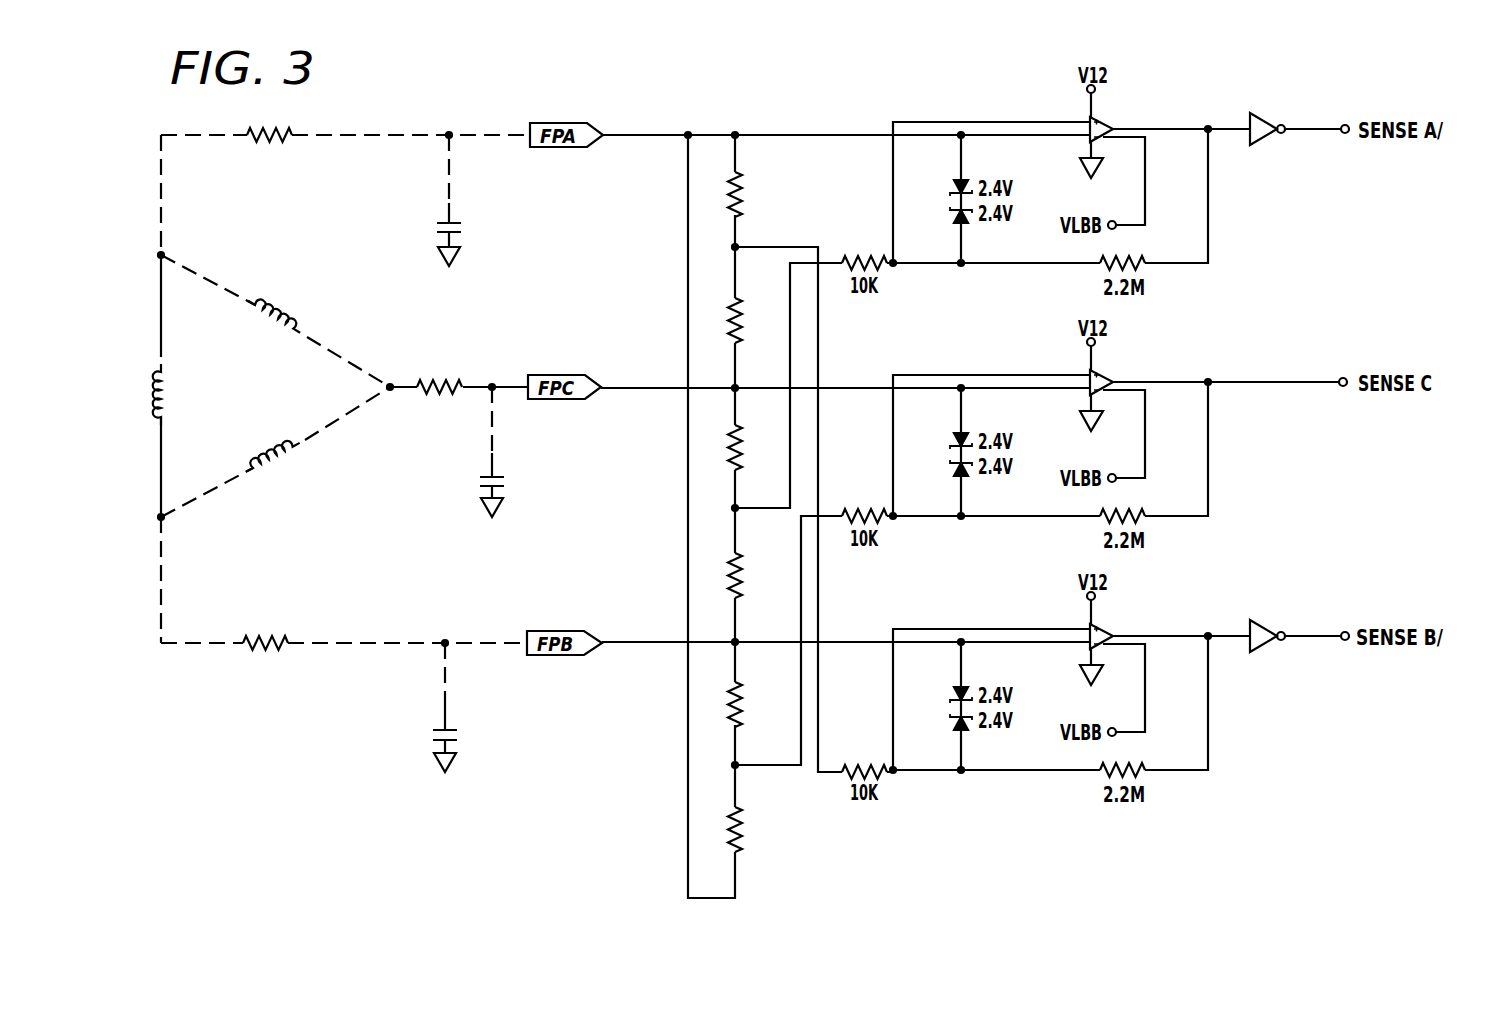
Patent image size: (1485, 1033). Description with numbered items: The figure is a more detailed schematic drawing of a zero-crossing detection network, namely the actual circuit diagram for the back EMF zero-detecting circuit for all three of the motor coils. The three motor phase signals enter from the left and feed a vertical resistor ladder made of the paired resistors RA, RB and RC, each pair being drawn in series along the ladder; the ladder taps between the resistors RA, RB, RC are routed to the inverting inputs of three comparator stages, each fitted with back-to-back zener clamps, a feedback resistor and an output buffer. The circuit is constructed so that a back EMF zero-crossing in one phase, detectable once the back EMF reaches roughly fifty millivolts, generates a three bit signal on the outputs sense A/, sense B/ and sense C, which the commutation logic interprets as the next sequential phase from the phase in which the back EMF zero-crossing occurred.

The phase A divider resistors RA is at (742, 254).
The phase B divider resistors RB is at (742, 506).
The phase C divider resistors RC is at (742, 761).